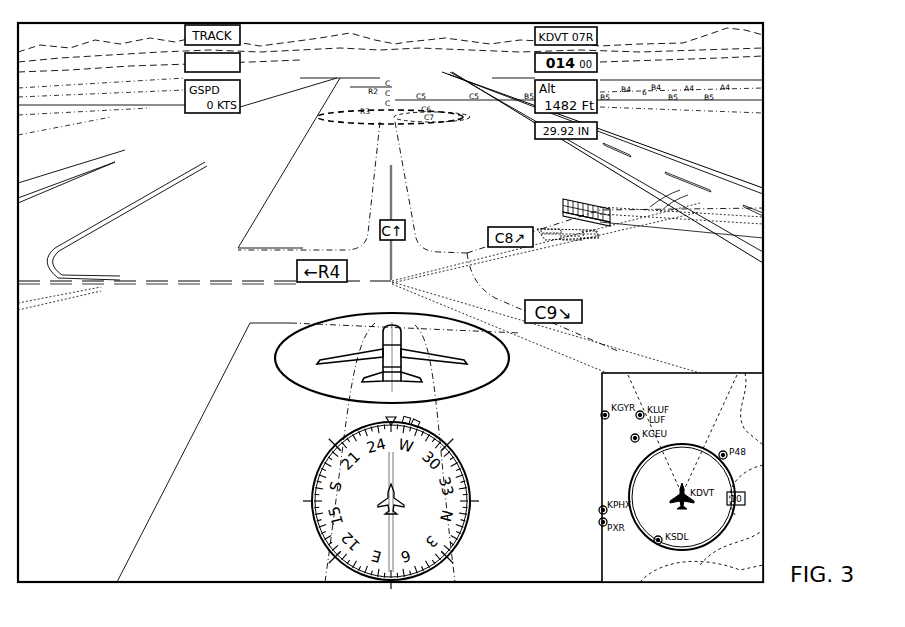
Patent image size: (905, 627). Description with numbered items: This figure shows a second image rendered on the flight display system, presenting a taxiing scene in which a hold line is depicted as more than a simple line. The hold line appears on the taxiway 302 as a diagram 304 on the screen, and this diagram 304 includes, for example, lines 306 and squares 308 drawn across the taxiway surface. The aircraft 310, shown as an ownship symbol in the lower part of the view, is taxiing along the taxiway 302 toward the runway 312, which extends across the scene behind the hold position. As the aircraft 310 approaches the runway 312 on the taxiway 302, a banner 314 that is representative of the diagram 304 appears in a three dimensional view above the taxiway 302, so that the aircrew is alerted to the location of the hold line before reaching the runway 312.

The taxiway 302 is at (546, 244).
The diagram 304 is at (548, 228).
The lines 306 is at (578, 240).
The squares 308 is at (600, 233).
The aircraft 310 is at (404, 350).
The runway 312 is at (573, 152).
The banner 314 is at (578, 198).